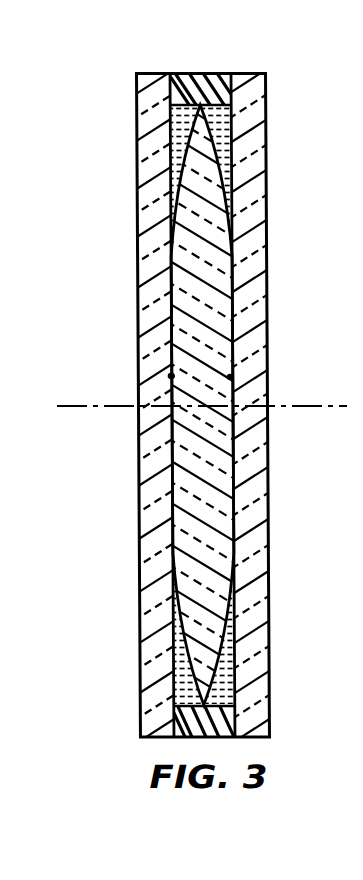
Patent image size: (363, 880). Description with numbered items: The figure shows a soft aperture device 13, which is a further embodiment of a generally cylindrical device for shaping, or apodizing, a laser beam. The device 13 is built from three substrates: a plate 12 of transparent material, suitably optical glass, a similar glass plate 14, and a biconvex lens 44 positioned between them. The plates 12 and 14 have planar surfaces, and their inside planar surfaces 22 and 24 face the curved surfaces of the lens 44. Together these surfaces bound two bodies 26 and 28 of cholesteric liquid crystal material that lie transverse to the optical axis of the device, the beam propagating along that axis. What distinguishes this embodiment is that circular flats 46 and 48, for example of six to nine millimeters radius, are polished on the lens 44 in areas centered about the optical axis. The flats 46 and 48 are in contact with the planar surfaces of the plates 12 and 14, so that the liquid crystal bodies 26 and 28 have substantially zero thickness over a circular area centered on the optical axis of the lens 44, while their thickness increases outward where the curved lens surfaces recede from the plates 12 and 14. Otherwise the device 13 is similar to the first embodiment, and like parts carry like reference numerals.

The soft aperture device 13 is at (128, 66).
The plate 12 is at (139, 224).
The glass plate 14 is at (255, 214).
The inside planar surface 22 is at (174, 670).
The inside planar surface 24 is at (233, 672).
The body of cholesteric liquid crystal material 26 is at (175, 122).
The body of cholesteric liquid crystal material 28 is at (228, 121).
The biconvex lens 44 is at (216, 303).
The flat 46 is at (168, 374).
The flat 48 is at (231, 377).